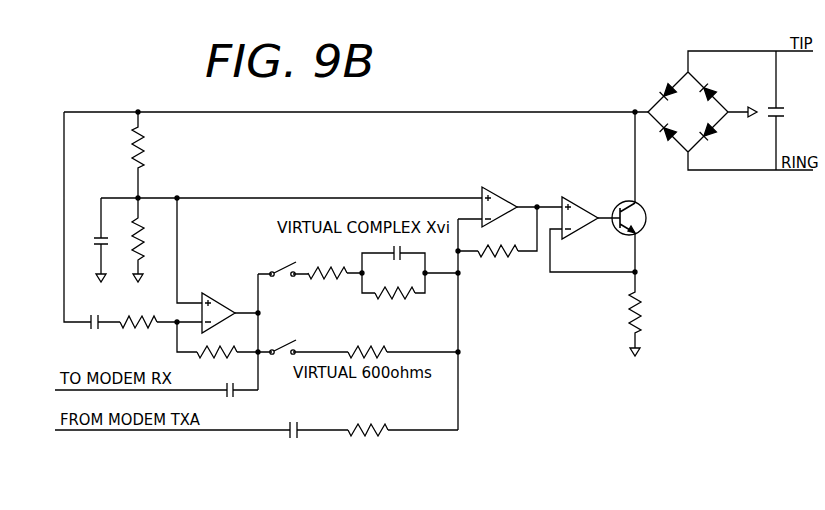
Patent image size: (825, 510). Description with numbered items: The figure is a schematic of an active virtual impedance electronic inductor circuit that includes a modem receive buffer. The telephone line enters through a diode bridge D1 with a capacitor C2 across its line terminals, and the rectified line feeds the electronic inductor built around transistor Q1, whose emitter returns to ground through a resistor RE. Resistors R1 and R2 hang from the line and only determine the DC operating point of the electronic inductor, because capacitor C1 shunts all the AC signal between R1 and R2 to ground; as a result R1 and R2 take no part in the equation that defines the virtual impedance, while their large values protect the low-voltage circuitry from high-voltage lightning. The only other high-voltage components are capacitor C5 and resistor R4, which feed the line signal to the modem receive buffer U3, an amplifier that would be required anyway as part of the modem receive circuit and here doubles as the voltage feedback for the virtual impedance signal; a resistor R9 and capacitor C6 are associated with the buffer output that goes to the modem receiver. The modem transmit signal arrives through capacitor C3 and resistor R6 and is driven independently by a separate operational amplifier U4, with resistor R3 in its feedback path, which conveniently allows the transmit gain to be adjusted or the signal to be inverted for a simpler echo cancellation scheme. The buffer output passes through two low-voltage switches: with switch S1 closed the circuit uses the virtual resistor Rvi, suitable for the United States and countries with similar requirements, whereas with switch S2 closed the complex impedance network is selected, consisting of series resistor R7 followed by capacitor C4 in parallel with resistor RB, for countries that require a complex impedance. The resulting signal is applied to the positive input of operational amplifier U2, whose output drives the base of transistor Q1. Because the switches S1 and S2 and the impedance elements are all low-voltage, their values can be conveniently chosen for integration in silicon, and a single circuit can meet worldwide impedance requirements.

The resistor R1 is at (152, 155).
The resistor R2 is at (152, 240).
The capacitor C1 is at (88, 240).
The capacitor C5 is at (96, 335).
The resistor R4 is at (138, 335).
The modem receive buffer U3 is at (218, 306).
The resistor R9 is at (217, 364).
The capacitor C6 is at (233, 402).
The capacitor C3 is at (297, 421).
The resistor R6 is at (368, 439).
The resistor Rvi is at (367, 375).
The switch S1 is at (283, 337).
The switch S2 is at (283, 258).
The series resistor R7 is at (327, 286).
The capacitor C4 is at (393, 266).
The resistor RB is at (393, 297).
The operational amplifier U4 is at (502, 202).
The resistor R3 is at (498, 264).
The operational amplifier U2 is at (581, 213).
The electronic inductor transistor Q1 is at (642, 218).
The emitter resistor RE is at (648, 314).
The diode bridge D1 is at (729, 110).
The capacitor C2 is at (790, 110).